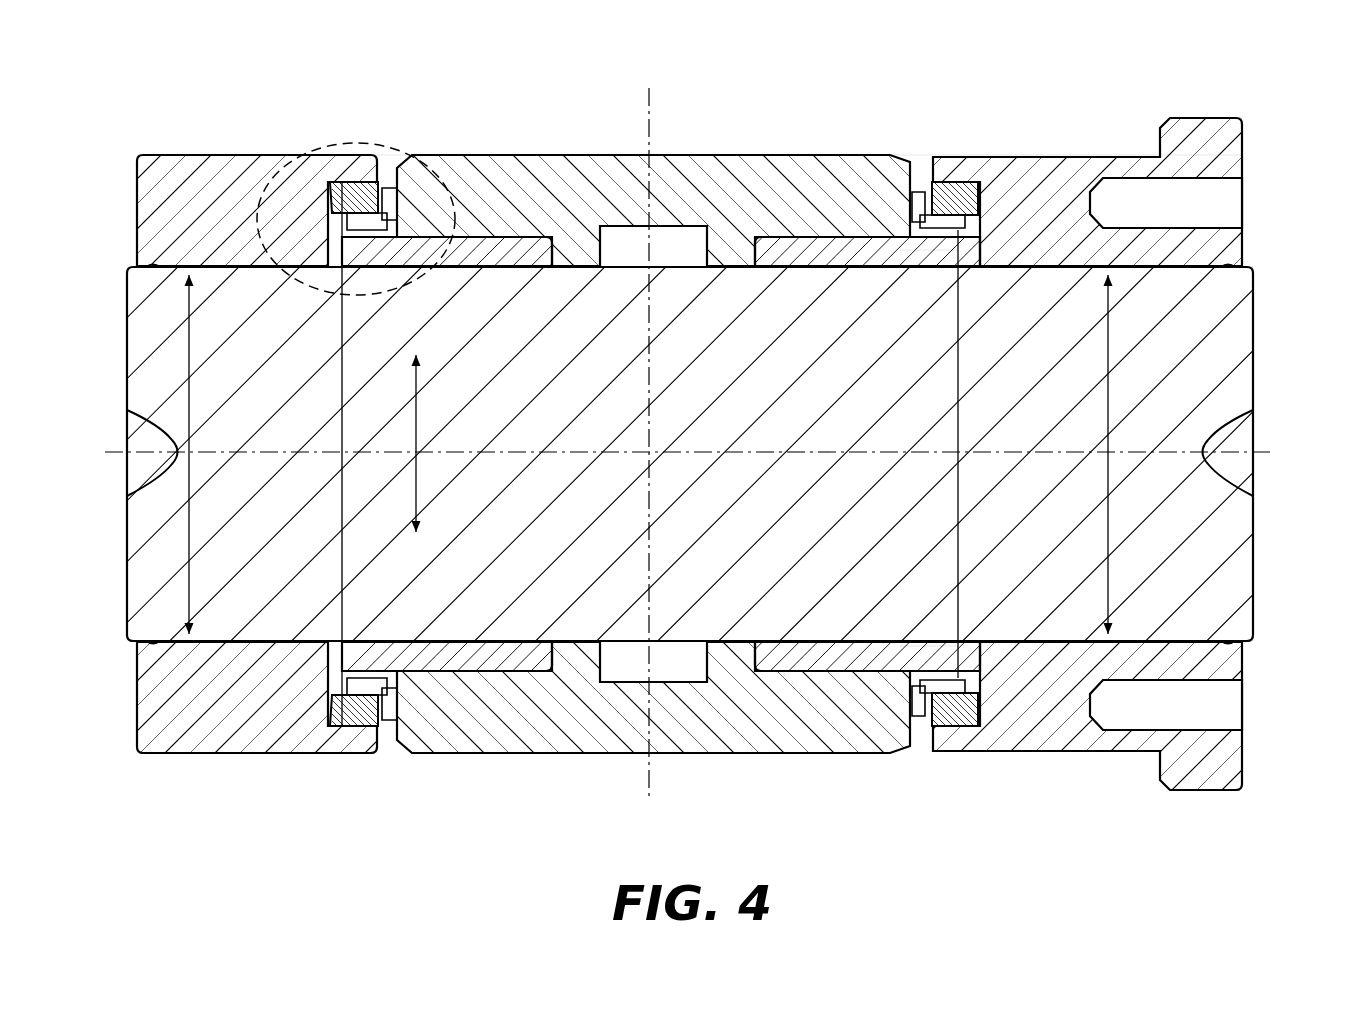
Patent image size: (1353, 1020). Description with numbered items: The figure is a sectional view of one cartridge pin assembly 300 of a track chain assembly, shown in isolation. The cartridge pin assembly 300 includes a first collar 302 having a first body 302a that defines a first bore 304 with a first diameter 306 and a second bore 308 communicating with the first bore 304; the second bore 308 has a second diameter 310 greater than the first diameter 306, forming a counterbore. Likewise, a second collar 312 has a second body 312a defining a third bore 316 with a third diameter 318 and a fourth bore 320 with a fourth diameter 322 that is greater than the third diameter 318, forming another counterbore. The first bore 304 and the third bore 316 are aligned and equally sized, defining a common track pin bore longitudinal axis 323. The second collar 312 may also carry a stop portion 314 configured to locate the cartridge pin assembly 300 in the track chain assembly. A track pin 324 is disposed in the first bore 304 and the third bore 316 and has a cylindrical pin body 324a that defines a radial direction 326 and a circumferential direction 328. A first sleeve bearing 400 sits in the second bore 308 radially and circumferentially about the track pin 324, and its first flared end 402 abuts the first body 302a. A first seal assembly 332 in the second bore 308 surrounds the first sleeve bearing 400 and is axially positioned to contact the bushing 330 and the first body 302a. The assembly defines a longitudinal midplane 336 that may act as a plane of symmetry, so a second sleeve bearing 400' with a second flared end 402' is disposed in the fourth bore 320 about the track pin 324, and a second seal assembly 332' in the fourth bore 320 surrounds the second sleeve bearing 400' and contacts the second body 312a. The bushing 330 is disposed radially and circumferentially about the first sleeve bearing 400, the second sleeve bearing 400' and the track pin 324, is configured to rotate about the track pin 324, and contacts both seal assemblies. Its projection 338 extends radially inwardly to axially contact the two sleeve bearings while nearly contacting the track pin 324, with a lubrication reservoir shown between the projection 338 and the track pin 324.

The cartridge pin assembly 300 is at (735, 45).
The first collar 302 is at (197, 148).
The first body 302a is at (230, 152).
The first bore 304 is at (175, 268).
The first diameter 306 is at (187, 298).
The second bore 308 is at (352, 182).
The second diameter 310 is at (340, 560).
The second collar 312 is at (1214, 87).
The second body 312a is at (1094, 152).
The stop portion 314 is at (1232, 142).
The third bore 316 is at (1030, 265).
The third diameter 318 is at (1110, 335).
The fourth bore 320 is at (958, 185).
The fourth diameter 322 is at (958, 590).
The track pin bore longitudinal axis 323 is at (792, 455).
The track pin 324 is at (498, 336).
The cylindrical pin body 324a is at (1212, 590).
The radial direction 326 is at (418, 482).
The circumferential direction 328 is at (922, 252).
The bushing 330 is at (536, 203).
The first seal assembly 332 is at (392, 405).
The second seal assembly 332' is at (923, 405).
The longitudinal midplane 336 is at (652, 775).
The projection 338 is at (722, 245).
The first sleeve bearing 400 is at (447, 377).
The second sleeve bearing 400' is at (853, 390).
The first flared end 402 is at (270, 216).
The second flared end 402' is at (1149, 454).